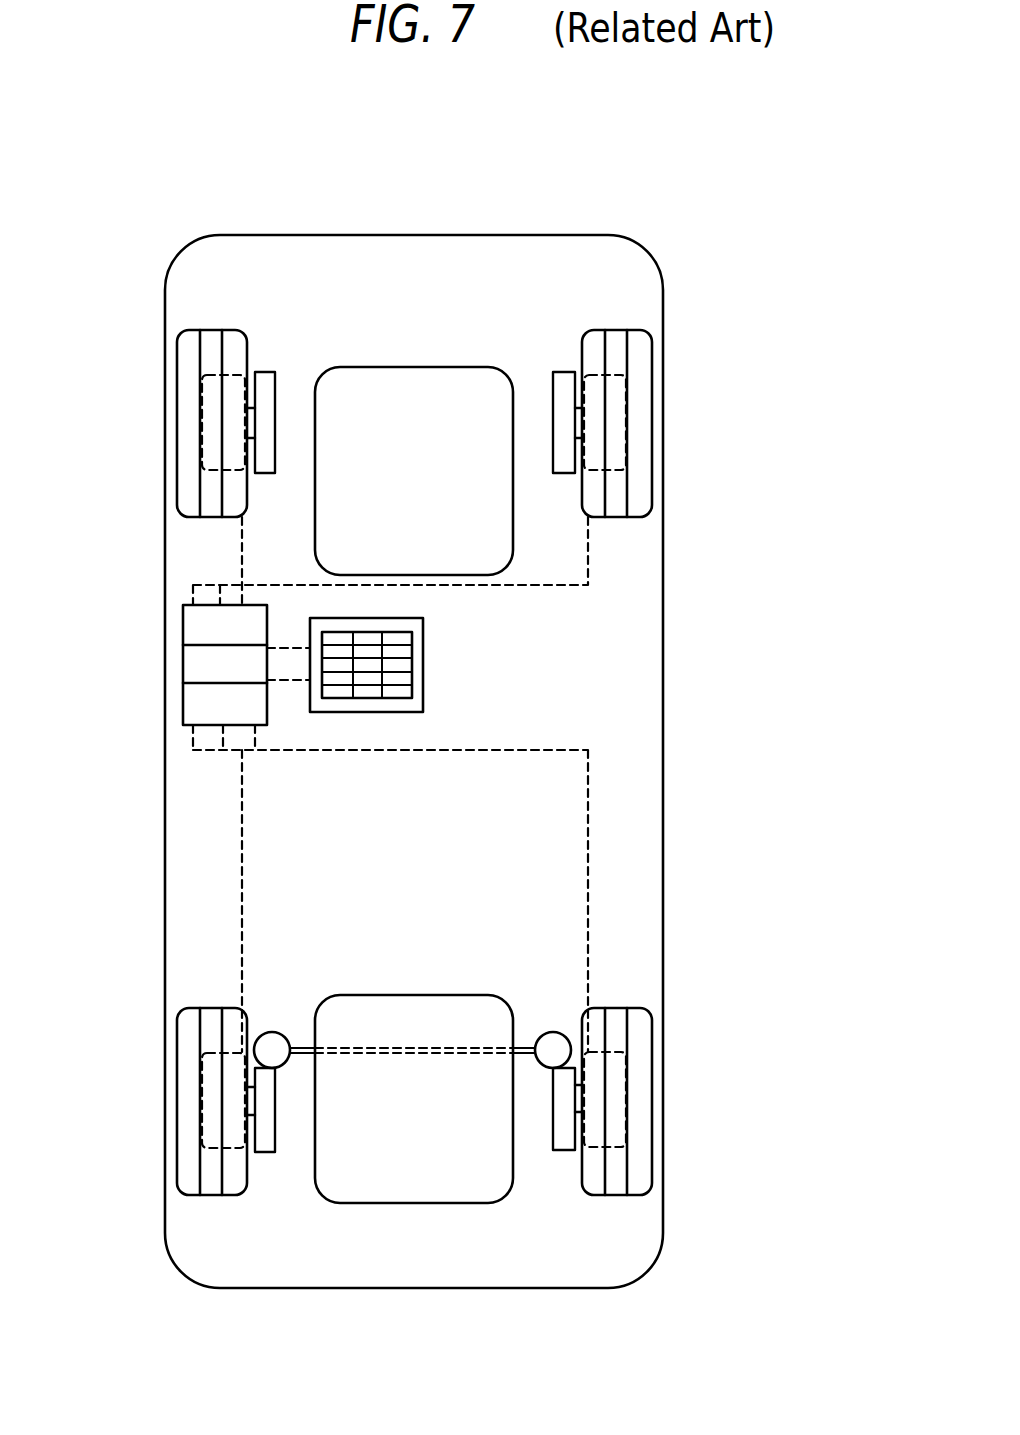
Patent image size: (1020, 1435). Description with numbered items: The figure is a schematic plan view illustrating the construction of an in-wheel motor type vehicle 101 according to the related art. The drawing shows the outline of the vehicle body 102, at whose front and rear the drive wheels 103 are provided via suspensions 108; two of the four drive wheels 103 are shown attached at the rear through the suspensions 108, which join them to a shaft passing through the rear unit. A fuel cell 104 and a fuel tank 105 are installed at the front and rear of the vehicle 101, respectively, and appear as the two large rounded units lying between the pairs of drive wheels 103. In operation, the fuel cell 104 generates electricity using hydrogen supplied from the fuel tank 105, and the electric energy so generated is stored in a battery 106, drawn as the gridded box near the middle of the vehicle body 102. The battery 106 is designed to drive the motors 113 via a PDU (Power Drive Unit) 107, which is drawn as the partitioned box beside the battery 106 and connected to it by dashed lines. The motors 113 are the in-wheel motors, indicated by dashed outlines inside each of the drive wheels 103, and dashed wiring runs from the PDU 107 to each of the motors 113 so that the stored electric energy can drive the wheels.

The in-wheel motor type vehicle 101 is at (652, 198).
The vehicle body 102 is at (165, 897).
The drive wheels 103 is at (190, 493).
The fuel cell 104 is at (415, 1185).
The fuel tank 105 is at (412, 403).
The battery 106 is at (367, 712).
The PDU (Power Drive Unit) 107 is at (183, 672).
The suspensions 108 is at (271, 1050).
The motors 113 is at (200, 370).